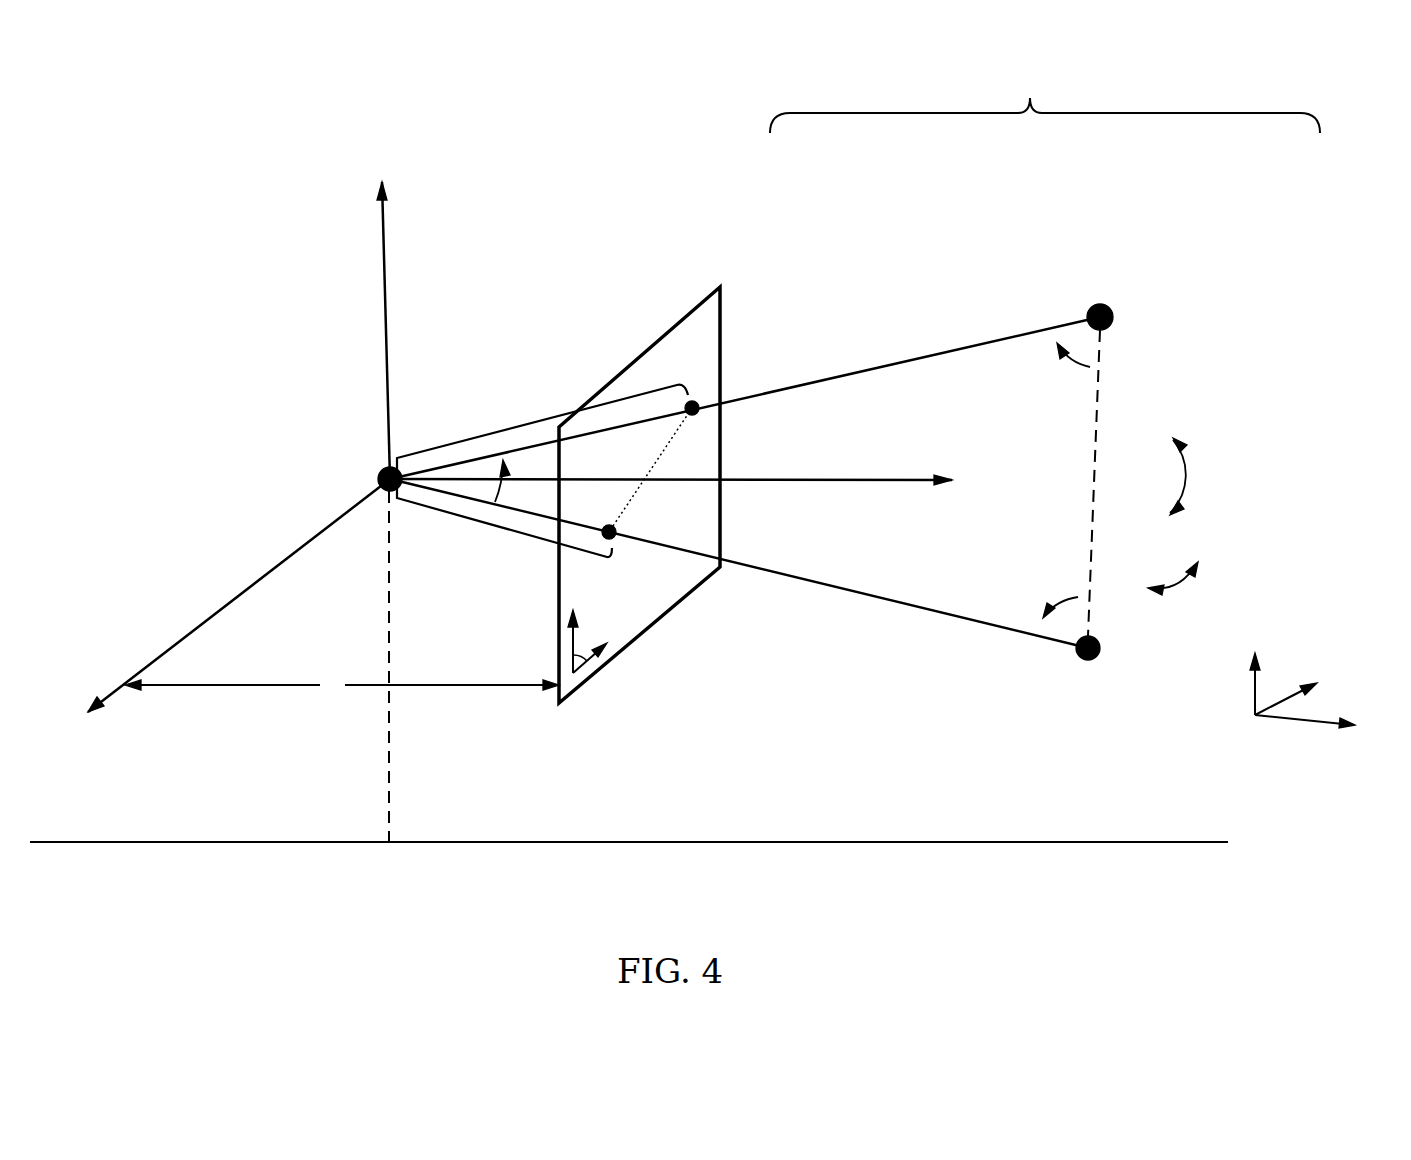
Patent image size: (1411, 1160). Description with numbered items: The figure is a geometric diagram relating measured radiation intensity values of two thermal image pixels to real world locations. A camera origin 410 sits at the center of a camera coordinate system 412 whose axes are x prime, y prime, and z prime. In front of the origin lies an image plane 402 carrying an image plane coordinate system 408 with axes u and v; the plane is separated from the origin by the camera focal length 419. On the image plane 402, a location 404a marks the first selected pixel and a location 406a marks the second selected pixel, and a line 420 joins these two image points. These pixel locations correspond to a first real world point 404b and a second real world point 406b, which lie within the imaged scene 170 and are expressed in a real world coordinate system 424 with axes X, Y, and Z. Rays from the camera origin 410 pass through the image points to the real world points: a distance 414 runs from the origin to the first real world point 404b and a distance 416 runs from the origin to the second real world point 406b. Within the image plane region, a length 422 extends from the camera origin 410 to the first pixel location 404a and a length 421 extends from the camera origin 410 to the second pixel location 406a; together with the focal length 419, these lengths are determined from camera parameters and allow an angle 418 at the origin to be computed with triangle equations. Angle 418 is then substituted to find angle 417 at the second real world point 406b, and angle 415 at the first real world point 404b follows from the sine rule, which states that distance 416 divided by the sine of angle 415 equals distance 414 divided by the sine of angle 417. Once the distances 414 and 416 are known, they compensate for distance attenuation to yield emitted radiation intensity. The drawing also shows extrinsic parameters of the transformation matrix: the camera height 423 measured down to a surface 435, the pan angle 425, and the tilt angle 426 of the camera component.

The scene 170 is at (1045, 100).
The image plane 402 is at (722, 302).
The location of pixel i1 404a is at (700, 414).
The real world point P1 404b is at (1092, 306).
The location of pixel i2 406a is at (617, 540).
The real world point P2 406b is at (1082, 660).
The image plane coordinate system 408 is at (589, 656).
The camera origin 410 is at (380, 471).
The camera coordinate system 412 is at (385, 291).
The distance from point P1 to camera origin 414 is at (880, 364).
The angle Y 415 is at (1090, 367).
The distance from point P2 to camera origin 416 is at (880, 602).
The angle B 417 is at (1078, 597).
The angle a 418 is at (497, 492).
The focal length 419 is at (270, 686).
The dotted line between image points i1 and i2 420 is at (650, 498).
The length from camera origin to point i2 421 is at (503, 529).
The length from camera origin to point i1 422 is at (574, 411).
The height 423 is at (389, 743).
The real world coordinate system 424 is at (1290, 718).
The pan angle 425 is at (1190, 472).
The tilt angle 426 is at (1176, 585).
The surface 435 is at (697, 841).